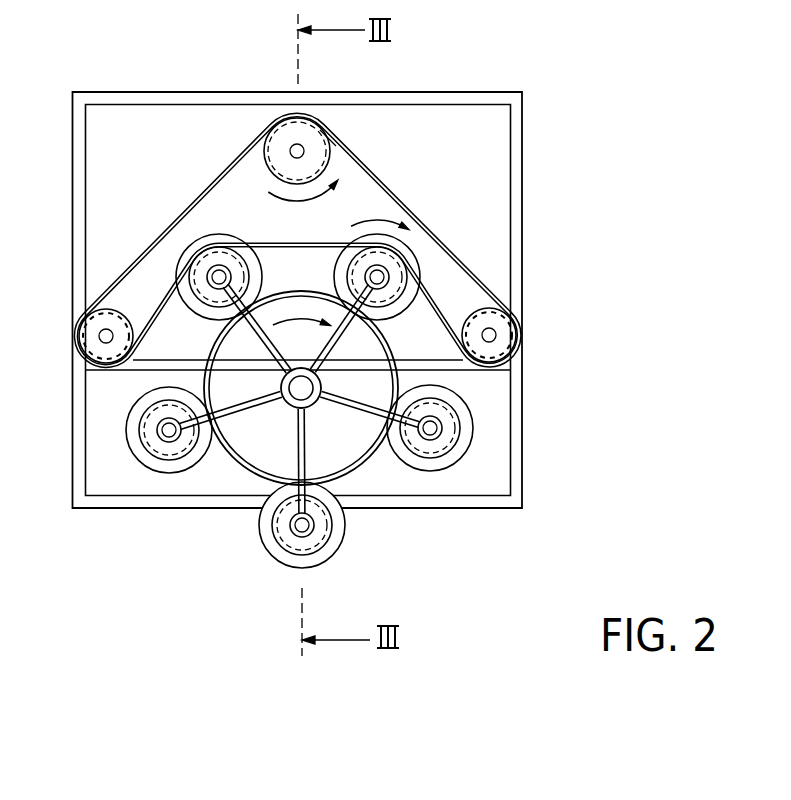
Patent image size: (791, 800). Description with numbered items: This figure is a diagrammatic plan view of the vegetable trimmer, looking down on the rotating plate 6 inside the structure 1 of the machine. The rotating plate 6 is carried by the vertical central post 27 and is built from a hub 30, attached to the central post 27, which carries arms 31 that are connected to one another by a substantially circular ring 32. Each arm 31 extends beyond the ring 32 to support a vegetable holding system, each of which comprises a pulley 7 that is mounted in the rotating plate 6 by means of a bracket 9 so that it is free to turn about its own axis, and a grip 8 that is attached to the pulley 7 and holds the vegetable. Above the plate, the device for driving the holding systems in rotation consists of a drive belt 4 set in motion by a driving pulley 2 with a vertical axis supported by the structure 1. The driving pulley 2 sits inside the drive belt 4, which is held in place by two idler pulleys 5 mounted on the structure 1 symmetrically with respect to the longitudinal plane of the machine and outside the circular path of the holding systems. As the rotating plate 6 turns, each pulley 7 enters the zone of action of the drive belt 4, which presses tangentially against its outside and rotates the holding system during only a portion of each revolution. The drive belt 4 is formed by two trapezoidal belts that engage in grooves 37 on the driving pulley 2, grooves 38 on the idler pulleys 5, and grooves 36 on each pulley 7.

The structure 1 is at (118, 88).
The driving pulley 2 is at (283, 128).
The drive belt 4 is at (193, 200).
The idler pulleys 5 is at (80, 324).
The rotating plate 6 is at (376, 460).
The pulley 7 is at (147, 425).
The grip 8 is at (137, 448).
The bracket 9 is at (433, 438).
The central post 27 is at (305, 395).
The hub 30 is at (295, 400).
The arms 31 is at (233, 457).
The ring 32 is at (255, 470).
The grooves 36 is at (153, 477).
The grooves 37 is at (338, 153).
The grooves 38 is at (73, 357).